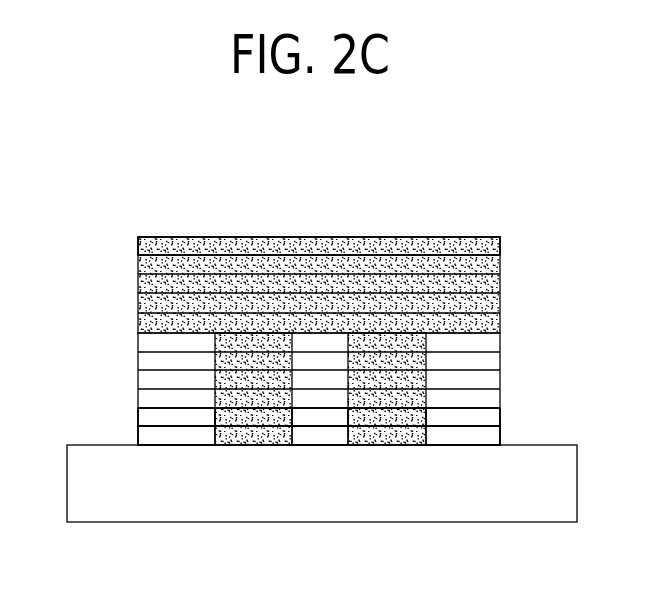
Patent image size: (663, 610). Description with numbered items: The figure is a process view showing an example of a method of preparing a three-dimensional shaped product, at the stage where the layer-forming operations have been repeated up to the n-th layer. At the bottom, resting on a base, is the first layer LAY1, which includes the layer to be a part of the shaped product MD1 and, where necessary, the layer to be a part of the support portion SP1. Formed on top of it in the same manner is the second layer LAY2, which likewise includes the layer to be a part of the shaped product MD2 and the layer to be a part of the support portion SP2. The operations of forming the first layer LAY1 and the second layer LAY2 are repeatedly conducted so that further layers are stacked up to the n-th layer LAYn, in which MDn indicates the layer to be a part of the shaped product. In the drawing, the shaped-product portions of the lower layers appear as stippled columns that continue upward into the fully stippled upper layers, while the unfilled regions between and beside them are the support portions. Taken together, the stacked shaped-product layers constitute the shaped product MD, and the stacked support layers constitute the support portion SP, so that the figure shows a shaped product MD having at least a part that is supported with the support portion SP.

The shaped product MD is at (120, 279).
The layer to be a part of the shaped product in the n-th layer MDn is at (265, 245).
The n-th layer LAYn is at (500, 241).
The support portion SP is at (126, 407).
The layer to be a part of the shaped product in the first layer MD1 is at (252, 433).
The layer to be a part of the support portion in the first layer SP1 is at (180, 433).
The first layer LAY1 is at (500, 440).
The second layer LAY2 is at (500, 420).
The layer to be a part of the support portion in the second layer SP2 is at (318, 417).
The layer to be a part of the shaped product in the second layer MD2 is at (253, 417).